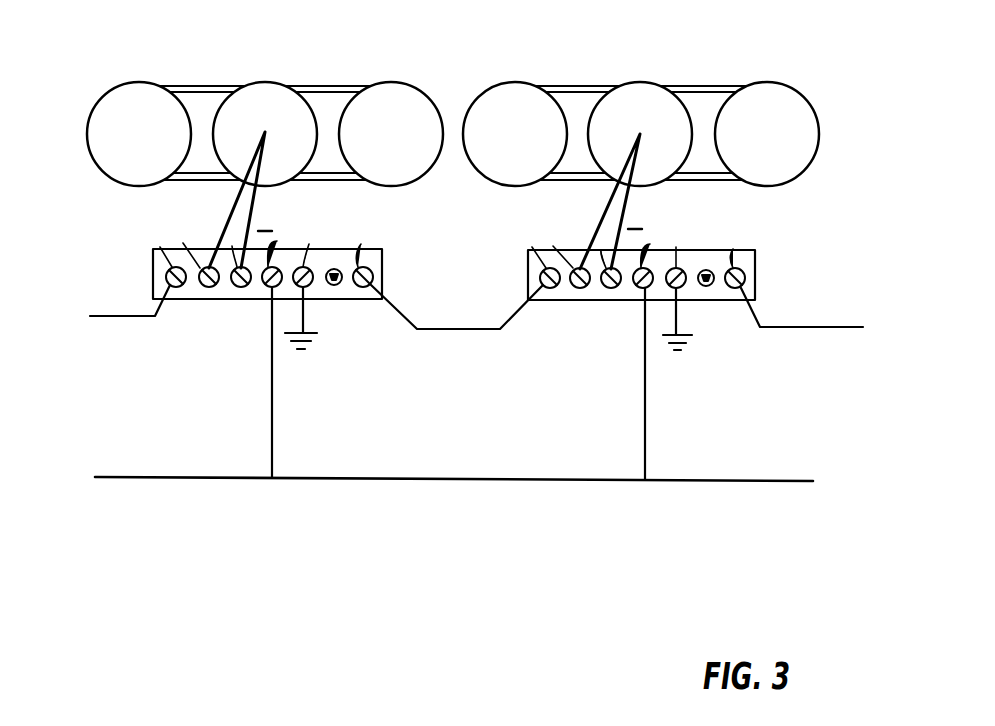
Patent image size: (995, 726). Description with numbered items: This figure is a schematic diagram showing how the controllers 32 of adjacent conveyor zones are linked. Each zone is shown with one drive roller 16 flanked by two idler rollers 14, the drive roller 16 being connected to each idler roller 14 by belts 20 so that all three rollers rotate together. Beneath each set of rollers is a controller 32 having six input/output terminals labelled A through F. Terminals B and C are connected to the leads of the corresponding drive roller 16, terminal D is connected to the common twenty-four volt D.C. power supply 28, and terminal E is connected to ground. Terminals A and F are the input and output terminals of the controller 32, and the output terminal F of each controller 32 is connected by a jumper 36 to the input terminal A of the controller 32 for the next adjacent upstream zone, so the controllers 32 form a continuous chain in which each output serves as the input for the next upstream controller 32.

The idler roller 14 is at (90, 115).
The drive roller 16 is at (265, 83).
The belt 20 is at (178, 86).
The 24 volt D.C. power supply 28 is at (183, 480).
The controller 32 is at (153, 249).
The jumper 36 is at (113, 316).